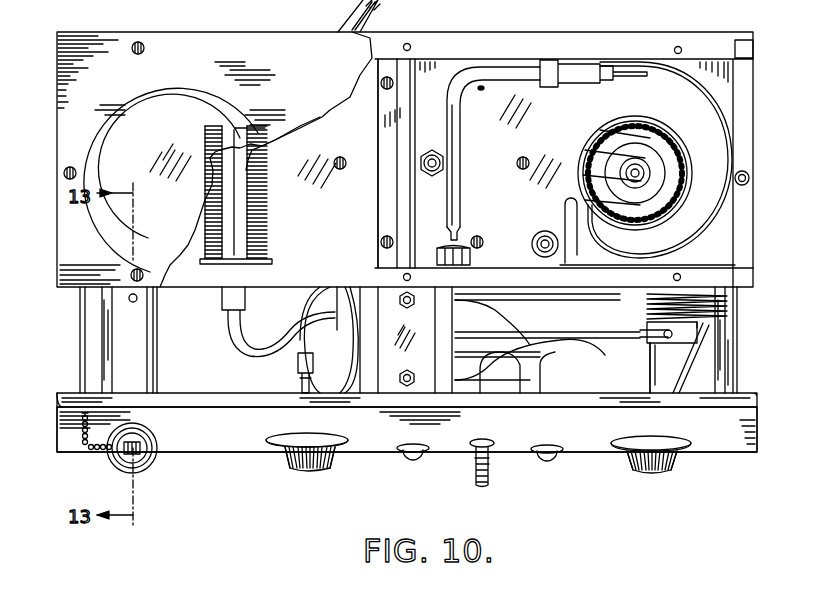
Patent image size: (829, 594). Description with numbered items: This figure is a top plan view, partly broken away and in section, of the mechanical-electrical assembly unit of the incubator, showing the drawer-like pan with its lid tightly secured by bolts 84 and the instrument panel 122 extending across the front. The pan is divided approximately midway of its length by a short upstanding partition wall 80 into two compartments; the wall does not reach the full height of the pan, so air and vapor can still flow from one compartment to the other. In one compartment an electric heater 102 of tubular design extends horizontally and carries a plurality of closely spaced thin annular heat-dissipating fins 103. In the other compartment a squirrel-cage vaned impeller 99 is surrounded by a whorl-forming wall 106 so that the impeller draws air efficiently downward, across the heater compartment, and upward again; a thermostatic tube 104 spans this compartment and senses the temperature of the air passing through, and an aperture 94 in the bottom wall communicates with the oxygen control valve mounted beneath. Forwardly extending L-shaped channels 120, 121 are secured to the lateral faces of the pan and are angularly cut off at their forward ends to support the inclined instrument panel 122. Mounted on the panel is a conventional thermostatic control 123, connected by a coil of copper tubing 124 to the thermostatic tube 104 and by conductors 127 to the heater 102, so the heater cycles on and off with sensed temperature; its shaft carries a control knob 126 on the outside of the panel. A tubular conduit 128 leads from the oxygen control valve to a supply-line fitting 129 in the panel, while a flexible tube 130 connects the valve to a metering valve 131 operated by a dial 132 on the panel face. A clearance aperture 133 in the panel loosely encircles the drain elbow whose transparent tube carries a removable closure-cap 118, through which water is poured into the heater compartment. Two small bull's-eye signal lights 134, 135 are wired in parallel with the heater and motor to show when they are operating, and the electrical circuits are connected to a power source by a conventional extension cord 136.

The bolts 84 is at (144, 51).
The extension cord 136 is at (348, 15).
The partition wall 80 is at (412, 104).
The electric heater 102 is at (265, 188).
The heat-dissipating fins 103 is at (206, 209).
The aperture 94 is at (435, 177).
The thermostatic tube 104 is at (462, 197).
The whorl-forming wall 106 is at (703, 98).
The impeller 99 is at (592, 131).
The L-shaped channel 120 is at (92, 352).
The L-shaped channel 121 is at (735, 348).
The conductors 127 is at (242, 345).
The flexible tube 130 is at (305, 302).
The metering valve 131 is at (298, 380).
The tubular conduit 128 is at (525, 310).
The coil of copper tubing 124 is at (662, 302).
The thermostatic control 123 is at (650, 368).
The clearance aperture 133 is at (140, 426).
The closure-cap 118 is at (148, 464).
The dial 132 is at (303, 469).
The bull's-eye signal light 134 is at (410, 462).
The supply-line fitting 129 is at (489, 478).
The bull's-eye signal light 135 is at (558, 464).
The control knob 126 is at (660, 472).
The instrument panel 122 is at (720, 446).